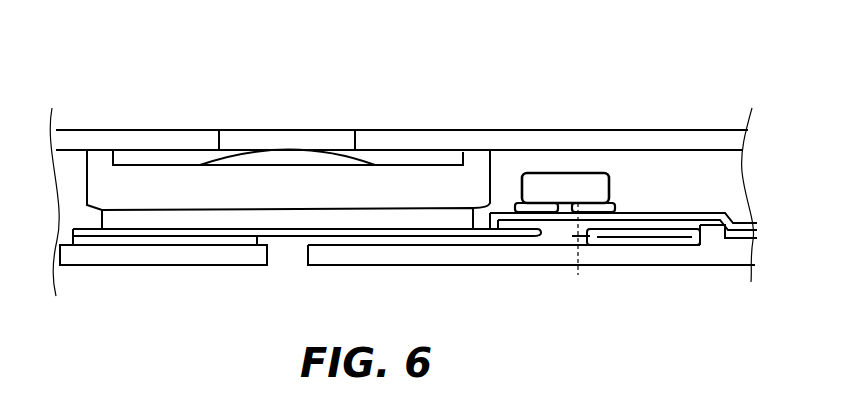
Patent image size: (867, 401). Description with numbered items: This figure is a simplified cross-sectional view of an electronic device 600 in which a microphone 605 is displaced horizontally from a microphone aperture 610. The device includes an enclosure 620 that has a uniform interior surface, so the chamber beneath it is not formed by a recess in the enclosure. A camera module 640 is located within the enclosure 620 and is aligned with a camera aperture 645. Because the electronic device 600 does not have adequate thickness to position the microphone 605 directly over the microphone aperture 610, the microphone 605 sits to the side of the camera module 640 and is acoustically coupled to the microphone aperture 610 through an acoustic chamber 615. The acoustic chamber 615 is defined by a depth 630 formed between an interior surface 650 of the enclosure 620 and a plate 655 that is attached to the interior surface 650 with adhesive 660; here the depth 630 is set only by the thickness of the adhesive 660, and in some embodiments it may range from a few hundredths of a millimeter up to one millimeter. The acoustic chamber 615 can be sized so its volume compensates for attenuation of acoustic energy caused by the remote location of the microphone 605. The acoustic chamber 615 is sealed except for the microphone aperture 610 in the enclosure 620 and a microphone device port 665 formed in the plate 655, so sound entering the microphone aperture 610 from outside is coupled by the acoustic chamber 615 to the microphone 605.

The electronic device 600 is at (314, 64).
The microphone 605 is at (570, 173).
The microphone aperture 610 is at (307, 250).
The acoustic chamber 615 is at (402, 238).
The enclosure 620 is at (628, 140).
The depth 630 is at (583, 240).
The camera module 640 is at (475, 166).
The camera aperture 645 is at (358, 140).
The interior surface 650 is at (507, 247).
The plate 655 is at (207, 229).
The adhesive 660 is at (658, 240).
The microphone device port 665 is at (547, 233).